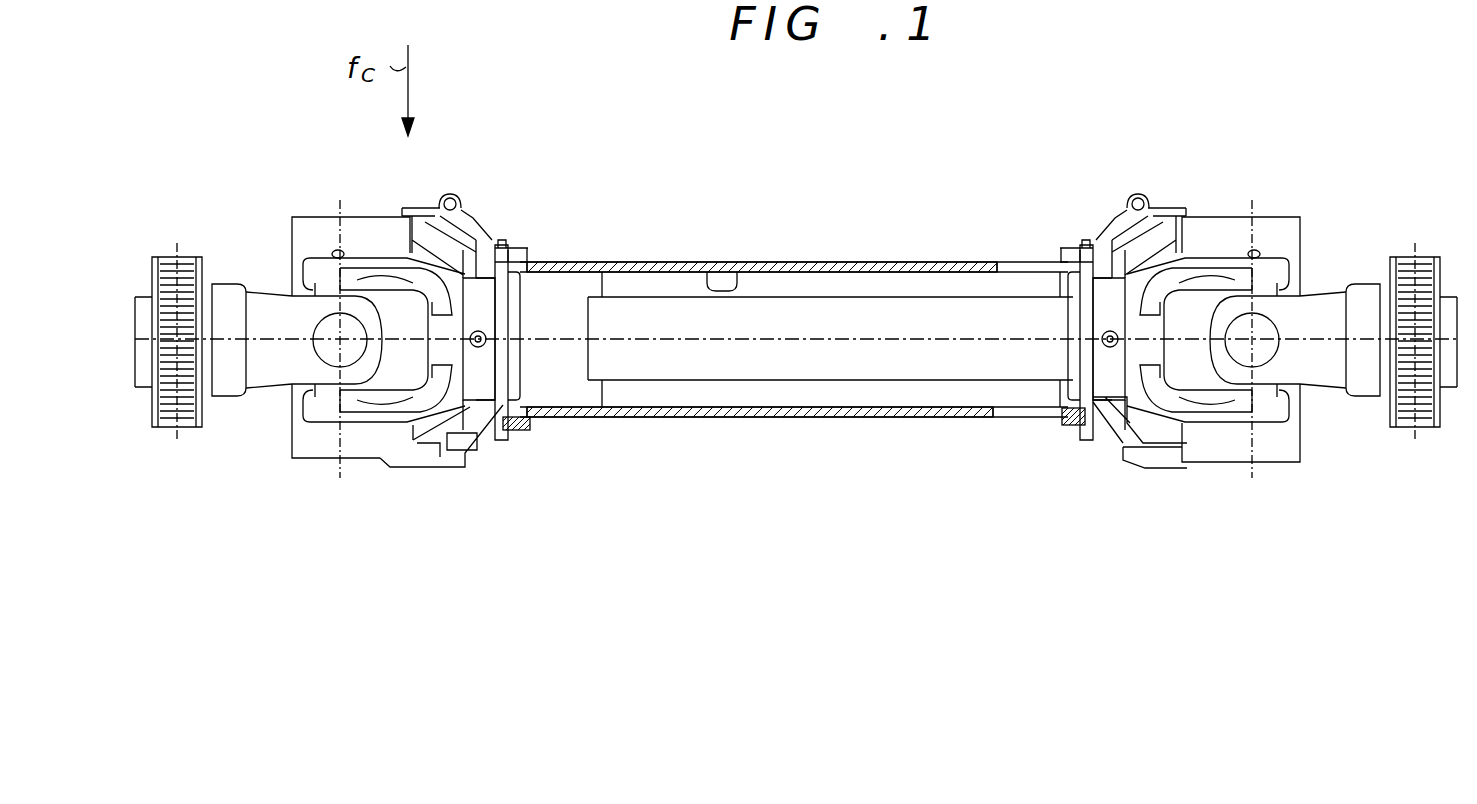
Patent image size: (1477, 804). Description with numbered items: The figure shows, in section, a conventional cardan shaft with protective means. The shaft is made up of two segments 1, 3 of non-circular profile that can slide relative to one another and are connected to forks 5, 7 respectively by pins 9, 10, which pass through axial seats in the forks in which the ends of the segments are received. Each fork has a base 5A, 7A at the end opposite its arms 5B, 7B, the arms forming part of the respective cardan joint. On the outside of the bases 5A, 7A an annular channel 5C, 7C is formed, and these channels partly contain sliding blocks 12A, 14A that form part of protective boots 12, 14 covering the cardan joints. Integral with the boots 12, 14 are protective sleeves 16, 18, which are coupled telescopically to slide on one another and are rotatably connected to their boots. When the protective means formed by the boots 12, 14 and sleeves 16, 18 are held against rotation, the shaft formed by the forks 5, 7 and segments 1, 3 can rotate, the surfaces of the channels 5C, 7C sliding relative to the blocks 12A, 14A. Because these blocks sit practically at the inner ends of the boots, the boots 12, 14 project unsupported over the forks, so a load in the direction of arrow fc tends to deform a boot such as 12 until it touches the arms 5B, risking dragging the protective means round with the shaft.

The shaft segment 1 is at (565, 318).
The shaft segment 3 is at (840, 305).
The fork 5 is at (373, 425).
The base of fork 5A is at (523, 372).
The arms of fork 5B is at (297, 413).
The annular channel 5C is at (505, 400).
The fork 7 is at (1222, 425).
The base of fork 7A is at (1068, 385).
The arms of fork 7B is at (1283, 410).
The annular channel 7C is at (1042, 267).
The pin 9 is at (487, 340).
The pin 10 is at (1100, 340).
The protective boot 12 is at (432, 193).
The sliding block 12A is at (503, 245).
The protective boot 14 is at (1202, 185).
The sliding block 14A is at (1087, 250).
The protective sleeve 16 is at (597, 262).
The protective sleeve 18 is at (737, 262).